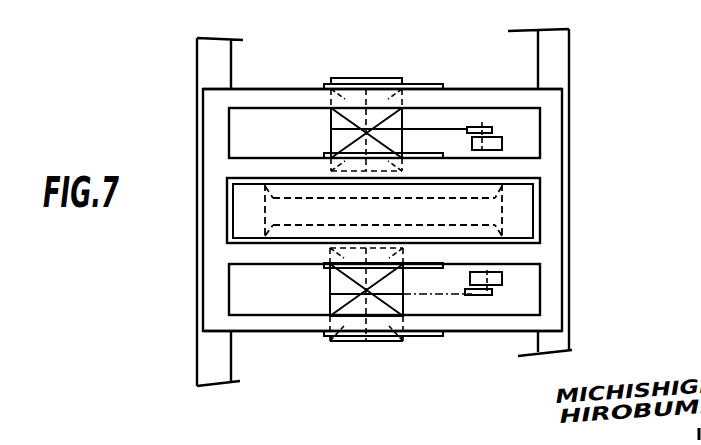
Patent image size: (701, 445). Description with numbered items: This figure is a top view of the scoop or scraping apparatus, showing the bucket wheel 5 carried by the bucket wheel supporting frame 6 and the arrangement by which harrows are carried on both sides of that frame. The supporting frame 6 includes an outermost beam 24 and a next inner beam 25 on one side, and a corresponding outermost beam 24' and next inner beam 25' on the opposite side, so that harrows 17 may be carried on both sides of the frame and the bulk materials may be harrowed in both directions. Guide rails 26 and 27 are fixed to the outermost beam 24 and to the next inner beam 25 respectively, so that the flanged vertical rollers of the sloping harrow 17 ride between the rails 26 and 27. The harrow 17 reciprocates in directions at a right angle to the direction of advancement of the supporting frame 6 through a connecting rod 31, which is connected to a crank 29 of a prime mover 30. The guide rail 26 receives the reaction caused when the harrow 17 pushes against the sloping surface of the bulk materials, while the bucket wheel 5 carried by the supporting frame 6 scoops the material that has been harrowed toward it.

The bucket wheel 5 is at (525, 212).
The bucket wheel supporting frame 6 is at (553, 172).
The sloping harrow 17 is at (390, 78).
The outermost beam 24 is at (382, 74).
The outermost beam 24' is at (382, 351).
The next inner beam 25 is at (384, 138).
The next inner beam 25' is at (384, 286).
The guide rail 26 is at (427, 84).
The guide rail 27 is at (432, 153).
The crank 29 is at (478, 126).
The prime mover 30 is at (502, 142).
The connecting rod 31 is at (450, 125).